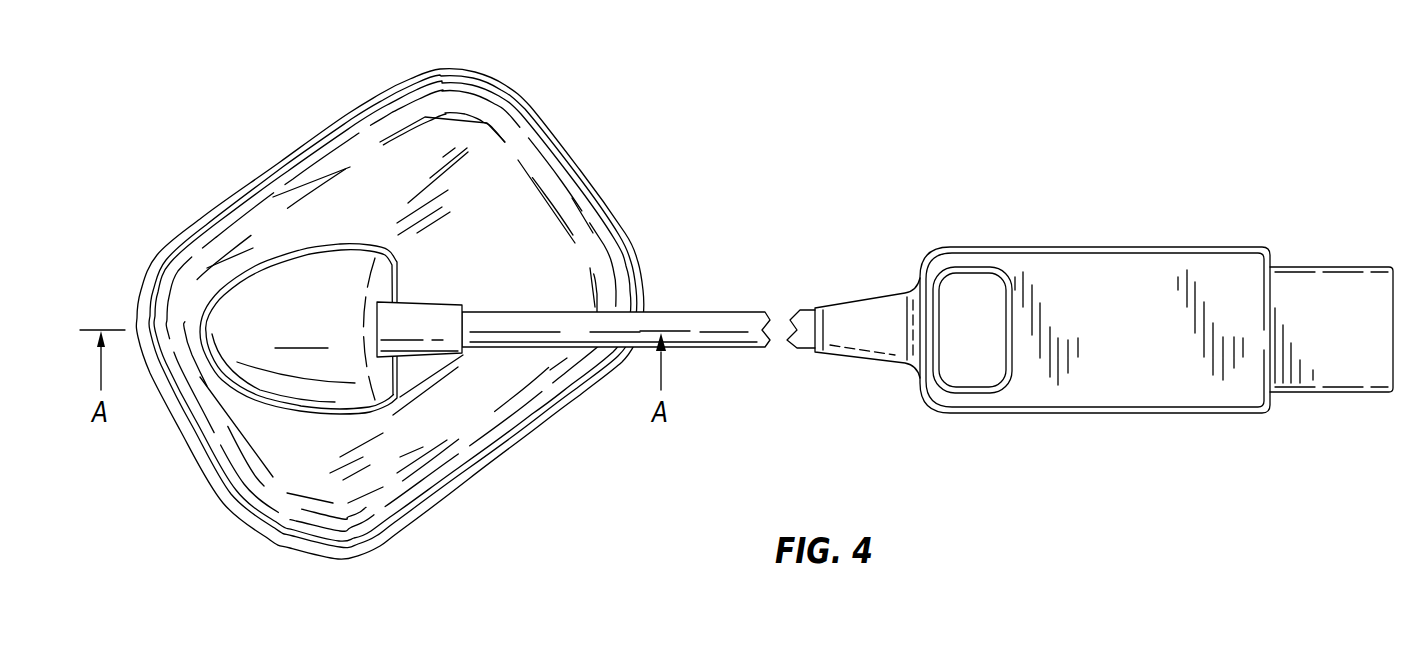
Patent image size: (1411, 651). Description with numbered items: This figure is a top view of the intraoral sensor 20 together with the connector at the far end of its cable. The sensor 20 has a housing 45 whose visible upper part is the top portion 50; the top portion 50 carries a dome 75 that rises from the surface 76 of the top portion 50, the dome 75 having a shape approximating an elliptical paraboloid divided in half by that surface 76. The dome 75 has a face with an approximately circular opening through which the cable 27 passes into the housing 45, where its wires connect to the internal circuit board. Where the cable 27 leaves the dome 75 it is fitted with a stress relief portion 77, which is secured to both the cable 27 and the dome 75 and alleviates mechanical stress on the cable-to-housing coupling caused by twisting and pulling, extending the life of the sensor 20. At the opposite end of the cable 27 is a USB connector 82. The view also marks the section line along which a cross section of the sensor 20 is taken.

The intraoral sensor 20 is at (234, 104).
The housing 45 is at (389, 314).
The top portion 50 is at (270, 213).
The dome 75 is at (317, 377).
The surface 76 is at (503, 180).
The stress relief portion 77 is at (420, 347).
The cable 27 is at (715, 349).
The USB connector 82 is at (996, 177).